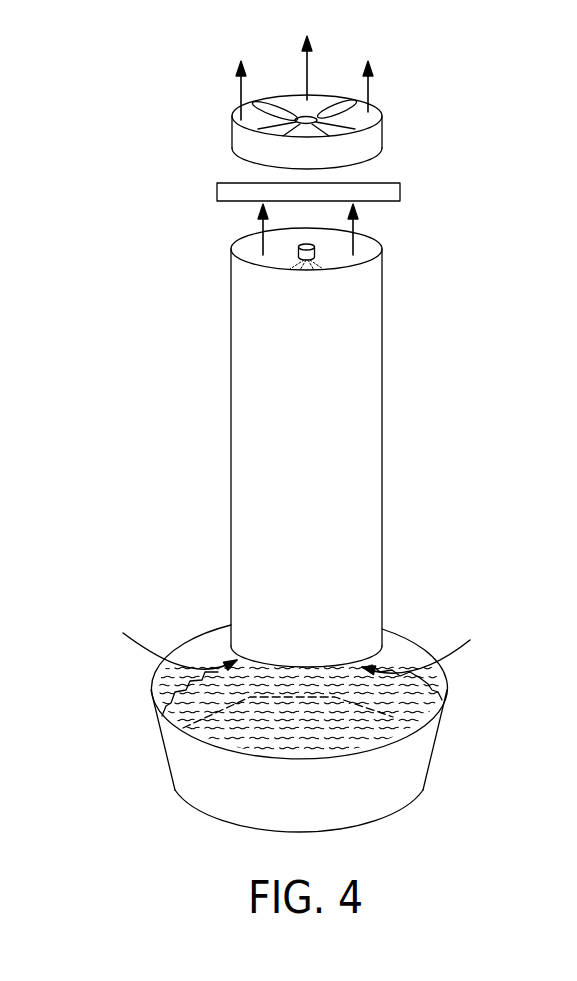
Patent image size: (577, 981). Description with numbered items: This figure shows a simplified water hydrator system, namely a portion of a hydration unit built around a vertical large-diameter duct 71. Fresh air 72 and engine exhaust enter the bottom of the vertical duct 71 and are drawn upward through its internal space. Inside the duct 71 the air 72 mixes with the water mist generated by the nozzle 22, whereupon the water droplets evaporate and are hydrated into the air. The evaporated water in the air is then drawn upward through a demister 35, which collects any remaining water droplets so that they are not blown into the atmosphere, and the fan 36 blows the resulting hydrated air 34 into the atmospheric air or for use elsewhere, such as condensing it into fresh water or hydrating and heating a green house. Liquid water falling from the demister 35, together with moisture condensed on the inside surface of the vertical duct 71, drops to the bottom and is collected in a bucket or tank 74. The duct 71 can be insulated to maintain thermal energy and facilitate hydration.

The nozzle 22 is at (297, 247).
The hydrated air 34 is at (385, 78).
The demister 35 is at (400, 191).
The fan 36 is at (382, 134).
The vertical large-diameter duct 71 is at (383, 412).
The air 72 is at (150, 653).
The tank 74 is at (433, 770).